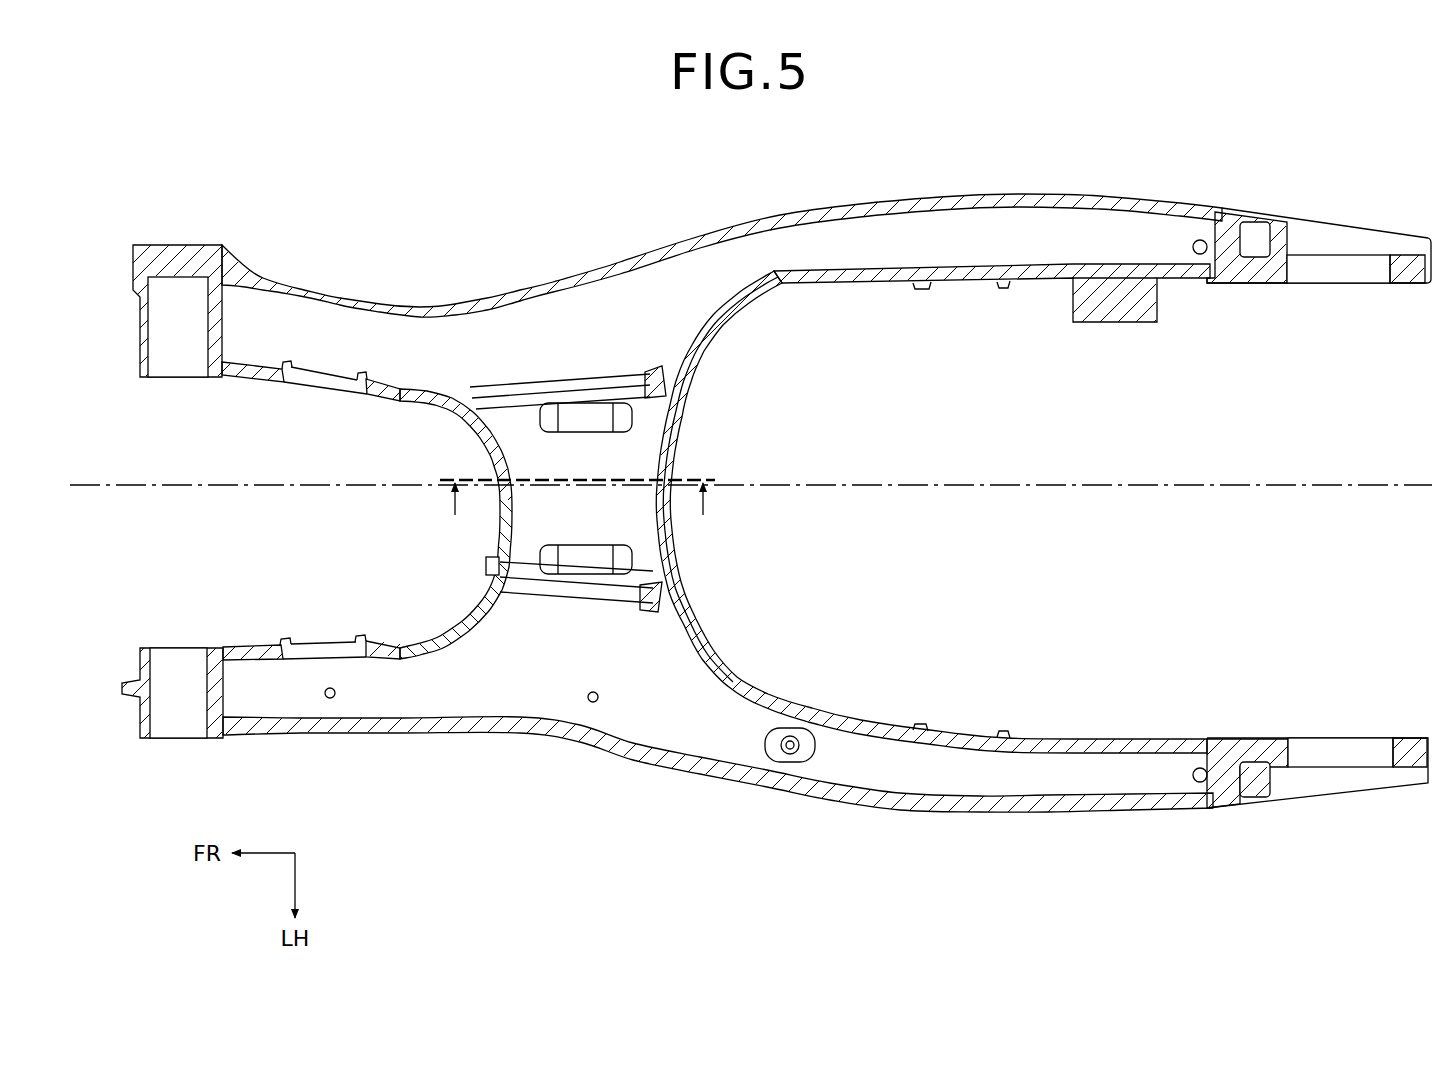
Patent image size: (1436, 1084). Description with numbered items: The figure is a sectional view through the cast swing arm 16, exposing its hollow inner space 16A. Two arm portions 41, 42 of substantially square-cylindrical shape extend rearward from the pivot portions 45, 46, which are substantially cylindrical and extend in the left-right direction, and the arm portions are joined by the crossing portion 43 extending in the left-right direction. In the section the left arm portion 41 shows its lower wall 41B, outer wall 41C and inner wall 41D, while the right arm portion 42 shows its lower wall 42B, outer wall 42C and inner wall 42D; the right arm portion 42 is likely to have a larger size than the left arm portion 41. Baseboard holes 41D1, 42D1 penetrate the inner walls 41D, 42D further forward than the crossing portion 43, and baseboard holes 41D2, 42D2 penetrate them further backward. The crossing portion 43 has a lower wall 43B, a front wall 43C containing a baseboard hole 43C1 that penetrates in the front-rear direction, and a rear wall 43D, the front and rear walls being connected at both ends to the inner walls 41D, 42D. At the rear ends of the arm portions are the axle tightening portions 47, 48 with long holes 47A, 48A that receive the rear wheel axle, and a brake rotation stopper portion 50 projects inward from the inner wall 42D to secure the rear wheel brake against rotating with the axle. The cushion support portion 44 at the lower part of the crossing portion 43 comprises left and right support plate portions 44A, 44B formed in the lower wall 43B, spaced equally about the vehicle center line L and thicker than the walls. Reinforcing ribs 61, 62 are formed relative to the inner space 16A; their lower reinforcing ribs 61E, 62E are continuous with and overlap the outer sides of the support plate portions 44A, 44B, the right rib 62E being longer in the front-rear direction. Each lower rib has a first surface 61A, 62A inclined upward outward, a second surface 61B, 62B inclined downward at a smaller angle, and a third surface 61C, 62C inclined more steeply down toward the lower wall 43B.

The swing arm 16 is at (751, 485).
The inner space 16A is at (547, 323).
The arm portion 41 is at (718, 574).
The lower wall 41B is at (672, 688).
The outer wall 41C is at (633, 762).
The inner wall 41D is at (715, 512).
The baseboard hole 41D1 is at (320, 645).
The baseboard hole 41D2 is at (965, 733).
The arm portion 42 is at (722, 278).
The lower wall 42B is at (667, 318).
The outer wall 42C is at (680, 255).
The inner wall 42D is at (716, 350).
The baseboard hole 42D1 is at (320, 382).
The baseboard hole 42D2 is at (963, 283).
The crossing portion 43 is at (528, 494).
The lower wall 43B is at (612, 516).
The front wall 43C is at (438, 524).
The baseboard hole 43C1 is at (496, 540).
The rear wall 43D is at (675, 445).
The cushion support portion 44 is at (931, 512).
The support plate portion 44A is at (737, 549).
The support plate portion 44B is at (673, 413).
The pivot portion 45 is at (136, 698).
The pivot portion 46 is at (150, 322).
The axle tightening portion 47 is at (1310, 779).
The long hole 47A is at (1342, 750).
The axle tightening portion 48 is at (1312, 241).
The long hole 48A is at (1342, 283).
The brake rotation stopper portion 50 is at (1118, 322).
The reinforcing rib 61 is at (563, 732).
The first surface 61A is at (535, 602).
The second surface 61B is at (590, 610).
The third surface 61C is at (623, 612).
The lower reinforcing rib 61E is at (570, 732).
The reinforcing rib 62 is at (570, 247).
The first surface 62A is at (580, 378).
The second surface 62B is at (607, 388).
The third surface 62C is at (650, 378).
The lower reinforcing rib 62E is at (581, 247).
The center line L is at (1350, 478).